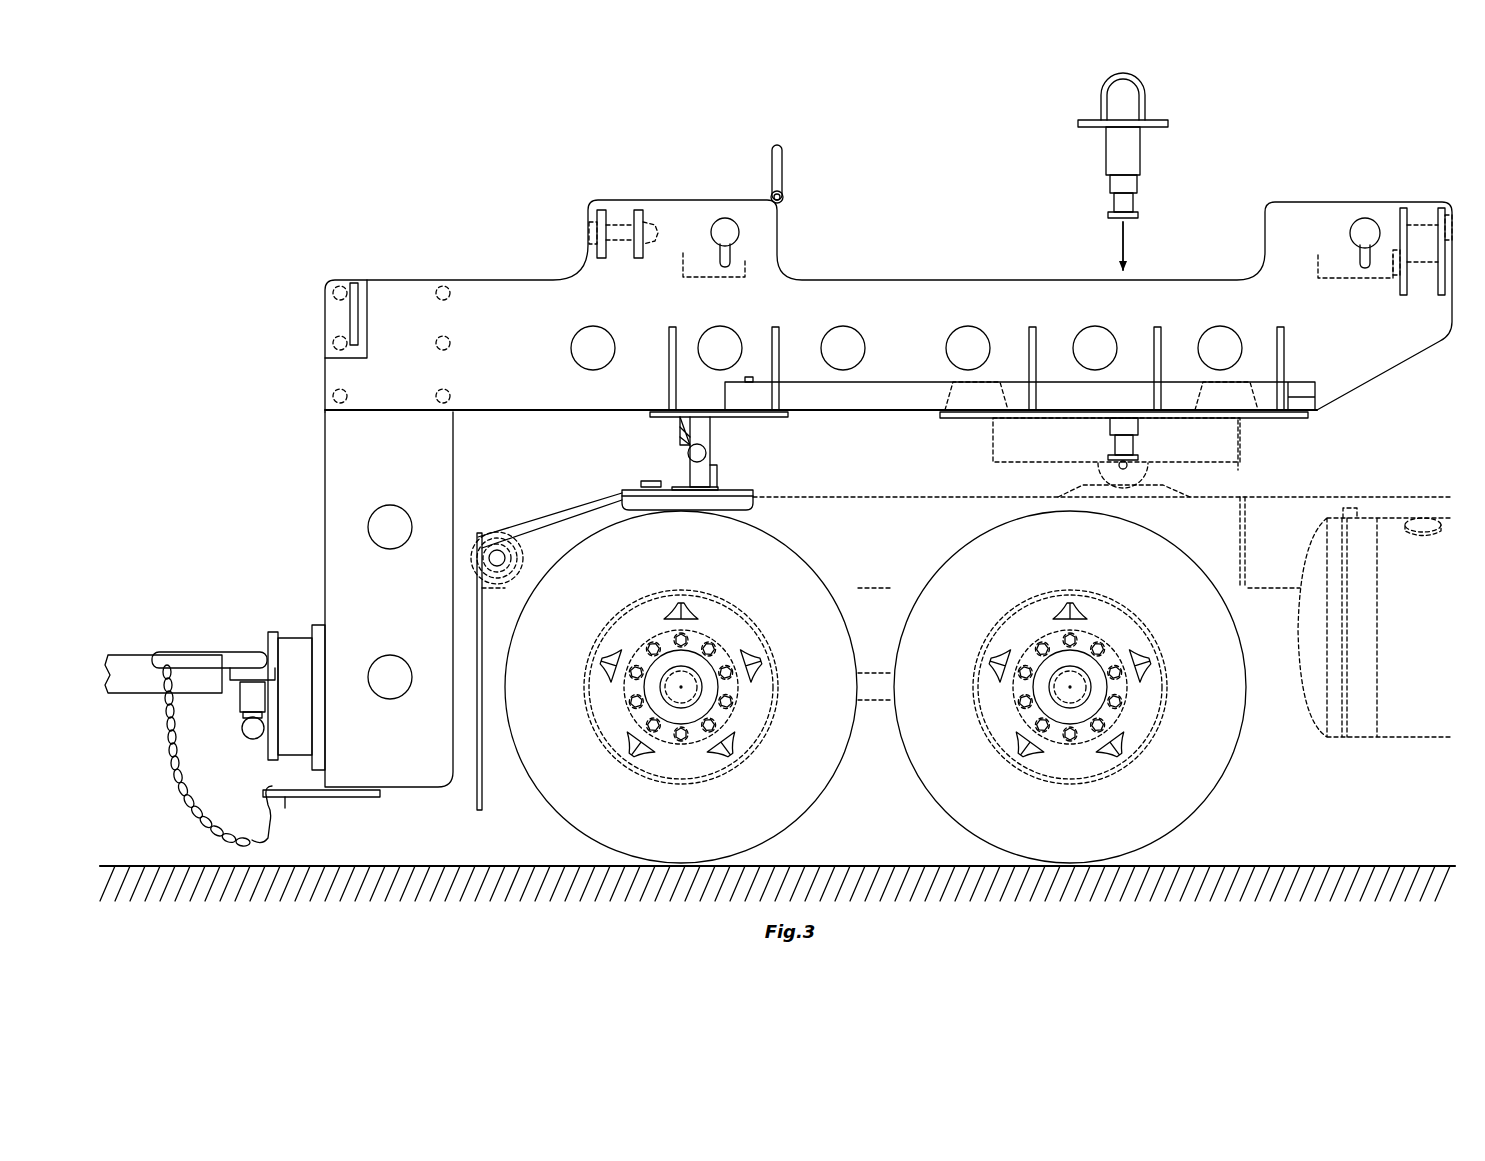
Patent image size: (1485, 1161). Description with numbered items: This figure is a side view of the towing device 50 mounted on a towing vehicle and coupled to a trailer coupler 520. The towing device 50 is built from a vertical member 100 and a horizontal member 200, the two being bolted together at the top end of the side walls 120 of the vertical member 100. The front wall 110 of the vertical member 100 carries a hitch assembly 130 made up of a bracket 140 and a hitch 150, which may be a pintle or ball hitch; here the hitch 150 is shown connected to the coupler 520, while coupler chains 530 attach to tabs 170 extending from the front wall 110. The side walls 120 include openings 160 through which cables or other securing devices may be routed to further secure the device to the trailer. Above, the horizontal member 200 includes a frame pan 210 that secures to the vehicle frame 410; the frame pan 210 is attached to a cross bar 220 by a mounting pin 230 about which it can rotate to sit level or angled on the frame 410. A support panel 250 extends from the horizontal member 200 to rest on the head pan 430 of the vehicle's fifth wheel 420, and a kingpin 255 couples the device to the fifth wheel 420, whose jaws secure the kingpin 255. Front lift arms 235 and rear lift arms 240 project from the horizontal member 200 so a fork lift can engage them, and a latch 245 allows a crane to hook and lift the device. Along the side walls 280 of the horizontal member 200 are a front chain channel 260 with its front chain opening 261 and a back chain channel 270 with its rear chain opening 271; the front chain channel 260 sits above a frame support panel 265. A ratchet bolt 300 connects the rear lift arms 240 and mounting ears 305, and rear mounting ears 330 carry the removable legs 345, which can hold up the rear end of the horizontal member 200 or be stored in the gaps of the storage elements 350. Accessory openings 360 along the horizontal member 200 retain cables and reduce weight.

The towing device 50 is at (518, 242).
The vertical member 100 is at (257, 490).
The front wall 110 is at (325, 440).
The side walls 120 is at (390, 500).
The hitch assembly 130 is at (230, 707).
The bracket 140 is at (293, 650).
The hitch 150 is at (232, 668).
The openings 160 is at (390, 680).
The tabs 170 is at (285, 800).
The horizontal member 200 is at (910, 160).
The frame pan 210 is at (760, 494).
The cross bar 220 is at (703, 433).
The mounting pin 230 is at (703, 455).
The front lift arms 235 is at (354, 285).
The rear lift arms 240 is at (601, 212).
The latch 245 is at (782, 160).
The support panel 250 is at (1308, 416).
The kingpin 255 is at (1108, 146).
The front chain channel 260 is at (778, 258).
The front chain opening 261 is at (725, 228).
The frame support panel 265 is at (787, 415).
The back chain channel 270 is at (1262, 240).
The rear chain opening 271 is at (1363, 232).
The side walls 280 is at (866, 348).
The ratchet bolt 300 is at (618, 240).
The mounting ears 305 is at (638, 212).
The rear mounting ears 330 is at (1442, 212).
The legs 345 is at (885, 392).
The storage elements 350 is at (1033, 345).
The accessory openings 360 is at (968, 336).
The frame 410 is at (875, 687).
The fifth wheel 420 is at (1242, 441).
The head pan 430 is at (1240, 462).
The coupler 520 is at (178, 652).
The coupler chains 530 is at (162, 772).